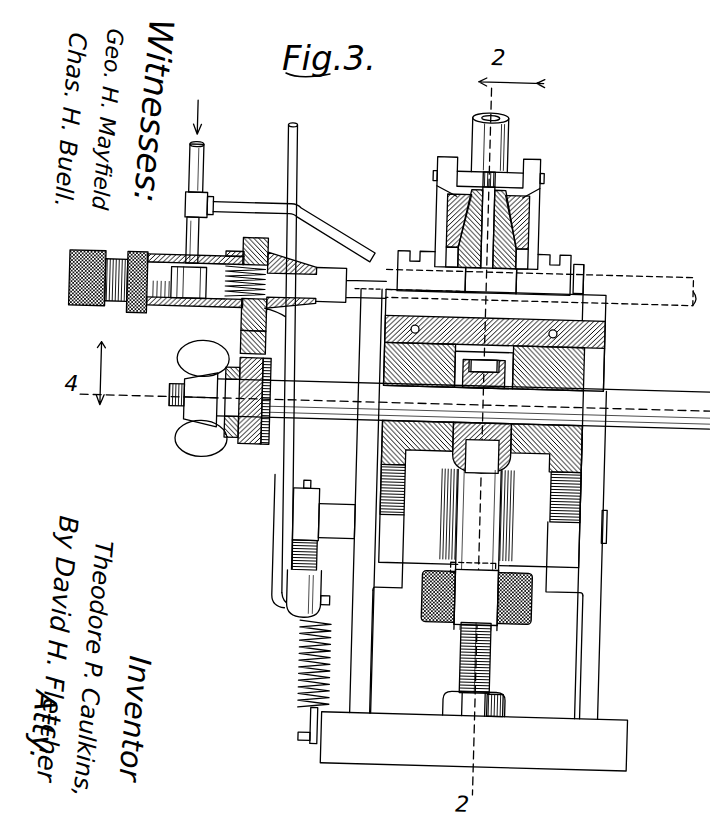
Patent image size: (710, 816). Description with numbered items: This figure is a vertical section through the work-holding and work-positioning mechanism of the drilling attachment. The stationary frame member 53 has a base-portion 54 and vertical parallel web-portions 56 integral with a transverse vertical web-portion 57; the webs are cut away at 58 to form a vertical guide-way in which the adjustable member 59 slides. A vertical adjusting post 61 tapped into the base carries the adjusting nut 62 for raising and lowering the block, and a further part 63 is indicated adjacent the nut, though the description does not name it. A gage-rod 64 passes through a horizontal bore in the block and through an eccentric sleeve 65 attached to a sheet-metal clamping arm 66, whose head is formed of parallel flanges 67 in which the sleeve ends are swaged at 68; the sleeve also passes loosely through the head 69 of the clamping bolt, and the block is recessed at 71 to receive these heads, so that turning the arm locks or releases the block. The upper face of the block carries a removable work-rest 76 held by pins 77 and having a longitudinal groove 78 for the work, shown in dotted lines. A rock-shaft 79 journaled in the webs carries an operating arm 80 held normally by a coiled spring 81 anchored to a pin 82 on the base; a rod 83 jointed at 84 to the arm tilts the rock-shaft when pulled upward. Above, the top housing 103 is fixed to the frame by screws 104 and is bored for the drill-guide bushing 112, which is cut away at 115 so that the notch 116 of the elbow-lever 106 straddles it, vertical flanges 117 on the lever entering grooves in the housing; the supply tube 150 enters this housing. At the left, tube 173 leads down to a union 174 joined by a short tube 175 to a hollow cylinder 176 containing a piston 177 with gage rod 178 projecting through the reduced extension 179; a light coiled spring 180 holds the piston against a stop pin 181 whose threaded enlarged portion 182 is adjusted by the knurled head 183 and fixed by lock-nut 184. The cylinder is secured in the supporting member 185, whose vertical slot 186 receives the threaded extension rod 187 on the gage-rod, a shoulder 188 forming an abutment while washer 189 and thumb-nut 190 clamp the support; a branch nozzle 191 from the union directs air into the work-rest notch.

The stationary frame member 53 is at (495, 504).
The base-portion 54 is at (473, 741).
The vertical parallel web-portions 56 is at (355, 660).
The transverse vertical web-portion 57 is at (476, 654).
The cut-away portion 58 is at (392, 588).
The adjustable member 59 is at (585, 376).
The vertical adjusting post 61 is at (468, 685).
The adjusting nut 62 is at (440, 623).
The collar 63 is at (455, 568).
The gage-rod 64 is at (659, 386).
The eccentric sleeve 65 is at (505, 388).
The clamping arm 66 is at (476, 550).
The parallel flanges 67 is at (468, 352).
The swaged ends 68 is at (470, 423).
The bolt head 69 is at (482, 466).
The recess 71 is at (383, 376).
The pillow-block or work-rest 76 is at (603, 330).
The pins 77 is at (383, 329).
The longitudinal groove 78 is at (600, 298).
The rock-shaft 79 is at (296, 530).
The operating arm 80 is at (300, 592).
The coiled spring 81 is at (306, 668).
The pin 82 is at (307, 741).
The rod 83 is at (292, 166).
The jointed connection 84 is at (283, 614).
The top housing 103 is at (433, 192).
The screws 104 is at (398, 254).
The elbow-lever 106 is at (515, 228).
The drill-guide or bushing 112 is at (452, 214).
The cut-away sides 115 is at (455, 243).
The notch or recess 116 is at (491, 281).
The vertical flanges 117 is at (524, 210).
The supply tube 150 is at (500, 126).
The tube 173 is at (198, 165).
The union 174 is at (196, 210).
The short tube 175 is at (182, 238).
The hollow cylinder 176 is at (156, 314).
The piston 177 is at (198, 306).
The gage rod 178 is at (312, 284).
The extension 179 is at (310, 322).
The coiled spring 180 is at (232, 270).
The pin 181 is at (165, 316).
The enlarged portion 182 is at (154, 254).
The knurled head 183 is at (88, 251).
The lock-nut 184 is at (112, 311).
The supporting member 185 is at (239, 340).
The vertical slot 186 is at (248, 383).
The threaded extension rod 187 is at (172, 406).
The shoulder 188 is at (255, 452).
The washer 189 is at (212, 440).
The thumb-nut 190 is at (182, 430).
The branch tube or nozzle 191 is at (310, 212).